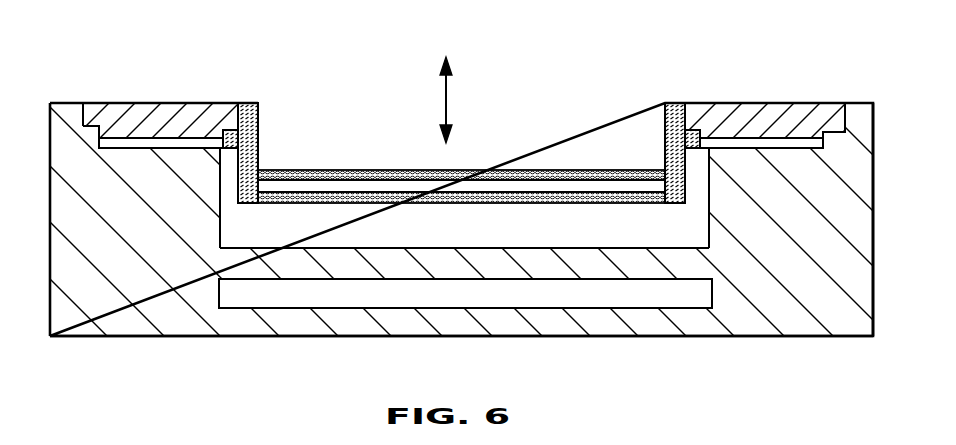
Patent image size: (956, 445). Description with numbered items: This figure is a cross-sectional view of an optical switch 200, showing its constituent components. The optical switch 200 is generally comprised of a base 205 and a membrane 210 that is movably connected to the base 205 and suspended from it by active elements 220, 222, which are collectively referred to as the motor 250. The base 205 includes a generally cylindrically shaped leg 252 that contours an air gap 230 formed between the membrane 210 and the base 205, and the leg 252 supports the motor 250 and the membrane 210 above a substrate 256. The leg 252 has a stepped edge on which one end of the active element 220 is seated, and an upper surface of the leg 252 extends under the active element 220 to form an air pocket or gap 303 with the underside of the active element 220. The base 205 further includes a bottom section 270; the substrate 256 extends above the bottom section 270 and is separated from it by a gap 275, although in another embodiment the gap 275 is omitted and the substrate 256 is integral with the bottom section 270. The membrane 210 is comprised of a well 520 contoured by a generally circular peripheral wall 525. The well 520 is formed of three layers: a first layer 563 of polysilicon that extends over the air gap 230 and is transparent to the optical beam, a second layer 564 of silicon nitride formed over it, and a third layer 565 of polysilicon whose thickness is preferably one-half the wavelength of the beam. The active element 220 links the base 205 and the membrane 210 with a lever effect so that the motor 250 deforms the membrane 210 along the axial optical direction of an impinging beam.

The optical switch 200 is at (470, 28).
The base 205 is at (187, 347).
The membrane 210 is at (602, 147).
The active element 220 is at (170, 105).
The active element 222 is at (772, 104).
The air gap 230 is at (464, 230).
The motor 250 is at (219, 84).
The leg 252 is at (461, 219).
The substrate 256 is at (464, 206).
The bottom section 270 is at (461, 351).
The gap 275 is at (465, 303).
The air pocket or gap 303 is at (117, 140).
The well 520 is at (328, 162).
The peripheral wall 525 is at (260, 138).
The first layer 563 is at (487, 200).
The second layer 564 is at (440, 190).
The third layer 565 is at (275, 170).